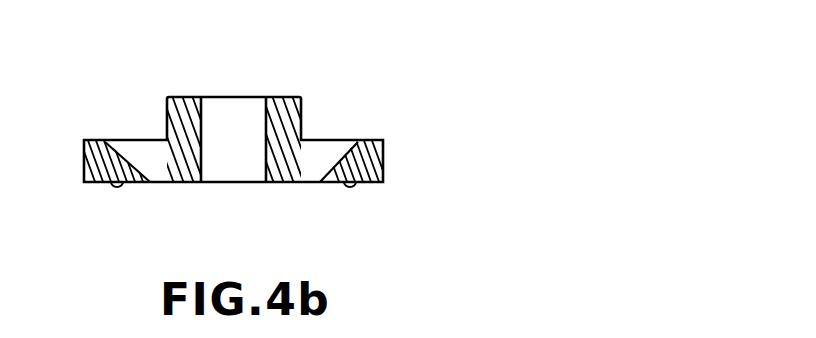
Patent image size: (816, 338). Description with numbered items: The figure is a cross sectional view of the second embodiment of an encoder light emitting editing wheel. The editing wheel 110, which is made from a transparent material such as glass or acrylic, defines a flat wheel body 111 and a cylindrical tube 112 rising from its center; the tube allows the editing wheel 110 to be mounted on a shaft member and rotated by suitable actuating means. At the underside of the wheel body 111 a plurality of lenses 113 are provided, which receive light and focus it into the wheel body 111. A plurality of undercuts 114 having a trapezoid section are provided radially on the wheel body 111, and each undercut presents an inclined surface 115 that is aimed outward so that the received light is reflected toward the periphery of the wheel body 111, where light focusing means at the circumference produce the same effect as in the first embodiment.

The editing wheel 110 is at (372, 163).
The wheel body 111 is at (105, 155).
The cylindrical tube 112 is at (167, 97).
The lens 113 is at (117, 187).
The undercut 114 is at (148, 158).
The inclined surface 115 is at (365, 183).